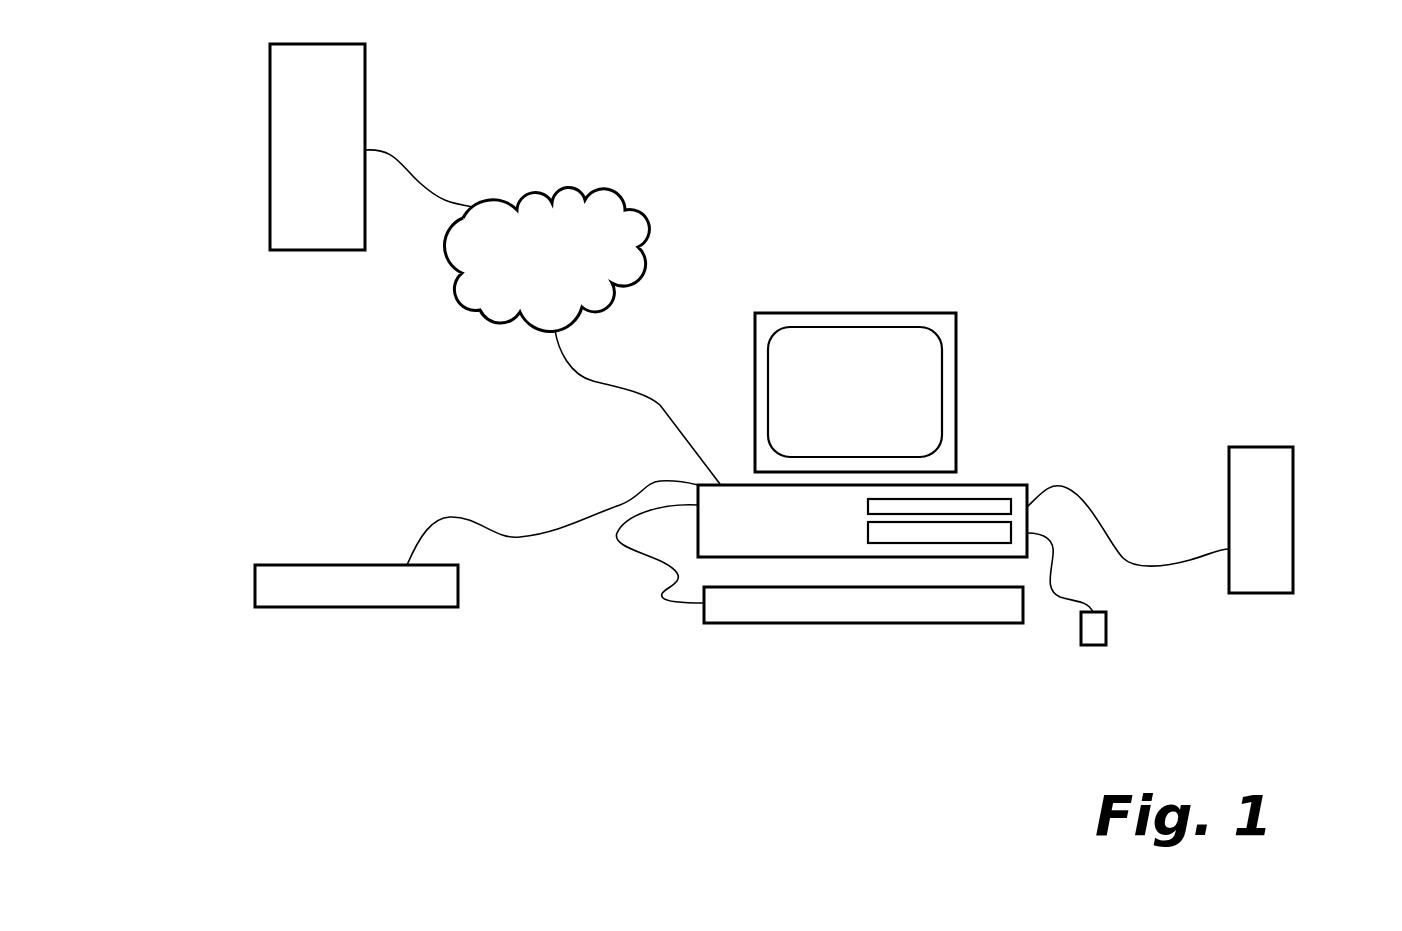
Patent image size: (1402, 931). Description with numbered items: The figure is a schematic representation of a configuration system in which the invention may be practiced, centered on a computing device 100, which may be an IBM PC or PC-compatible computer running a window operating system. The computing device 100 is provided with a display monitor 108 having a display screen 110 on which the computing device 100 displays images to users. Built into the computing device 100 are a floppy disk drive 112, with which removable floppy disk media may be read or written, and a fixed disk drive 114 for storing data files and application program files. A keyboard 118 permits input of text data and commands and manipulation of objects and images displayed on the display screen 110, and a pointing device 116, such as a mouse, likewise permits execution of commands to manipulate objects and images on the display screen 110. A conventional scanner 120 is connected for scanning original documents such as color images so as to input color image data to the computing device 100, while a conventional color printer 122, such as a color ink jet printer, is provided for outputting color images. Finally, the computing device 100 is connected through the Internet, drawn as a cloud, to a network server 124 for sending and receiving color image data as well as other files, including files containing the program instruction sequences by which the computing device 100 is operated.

The computing device 100 is at (977, 275).
The display monitor 108 is at (957, 393).
The display screen 110 is at (843, 348).
The floppy disk drive 112 is at (977, 506).
The fixed disk drive 114 is at (992, 530).
The pointing device 116 is at (1082, 634).
The keyboard 118 is at (738, 613).
The scanner 120 is at (299, 610).
The color printer 122 is at (1278, 482).
The network server 124 is at (270, 218).